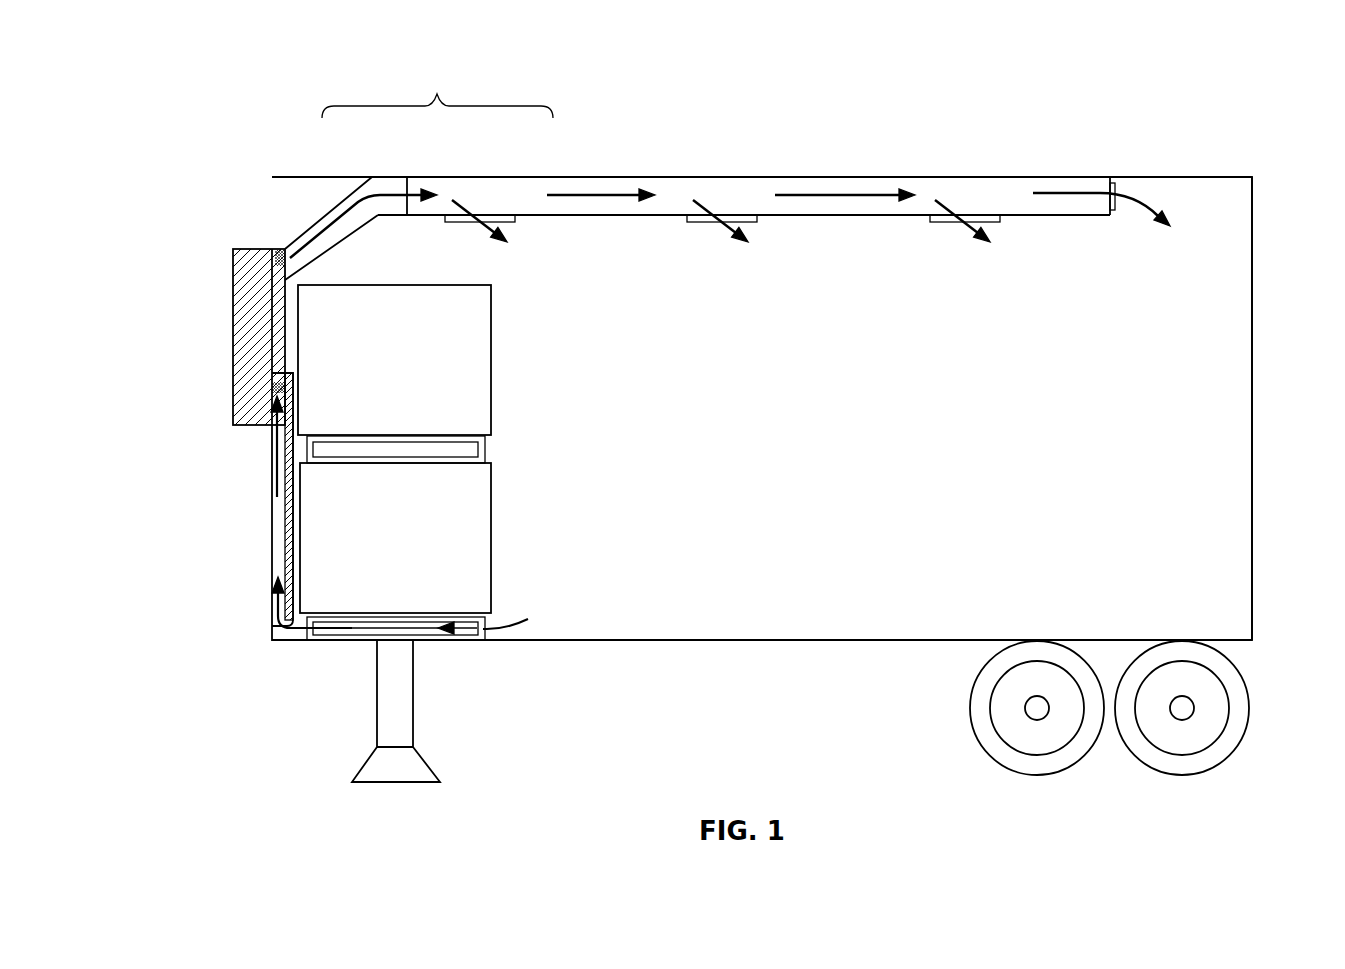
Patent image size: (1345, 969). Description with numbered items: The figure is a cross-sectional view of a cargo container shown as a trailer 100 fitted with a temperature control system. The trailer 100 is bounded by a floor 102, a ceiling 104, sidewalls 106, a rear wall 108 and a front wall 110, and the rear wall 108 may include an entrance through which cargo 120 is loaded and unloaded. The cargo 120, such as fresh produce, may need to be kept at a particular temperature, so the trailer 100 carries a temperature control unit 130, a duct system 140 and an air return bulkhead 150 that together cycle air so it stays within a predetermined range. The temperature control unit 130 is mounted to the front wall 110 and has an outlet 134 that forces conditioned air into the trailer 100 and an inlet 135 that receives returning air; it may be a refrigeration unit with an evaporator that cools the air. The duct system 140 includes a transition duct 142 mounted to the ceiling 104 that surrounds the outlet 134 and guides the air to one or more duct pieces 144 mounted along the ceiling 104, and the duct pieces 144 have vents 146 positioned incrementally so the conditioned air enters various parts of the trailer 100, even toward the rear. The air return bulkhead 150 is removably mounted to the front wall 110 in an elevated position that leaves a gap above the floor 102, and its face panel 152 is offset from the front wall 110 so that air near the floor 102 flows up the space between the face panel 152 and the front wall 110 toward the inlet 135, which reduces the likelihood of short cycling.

The trailer 100 is at (222, 75).
The floor 102 is at (795, 640).
The ceiling 104 is at (1173, 180).
The sidewalls 106 is at (1213, 318).
The rear wall 108 is at (1250, 392).
The front wall 110 is at (270, 476).
The cargo 120 is at (377, 369).
The temperature control unit 130 is at (220, 252).
The outlet 134 is at (330, 227).
The inlet 135 is at (272, 386).
The duct system 140 is at (437, 91).
The transition duct 142 is at (343, 197).
The duct pieces 144 is at (580, 215).
The vents 146 is at (470, 222).
The air return bulkhead 150 is at (278, 560).
The face panel 152 is at (292, 528).